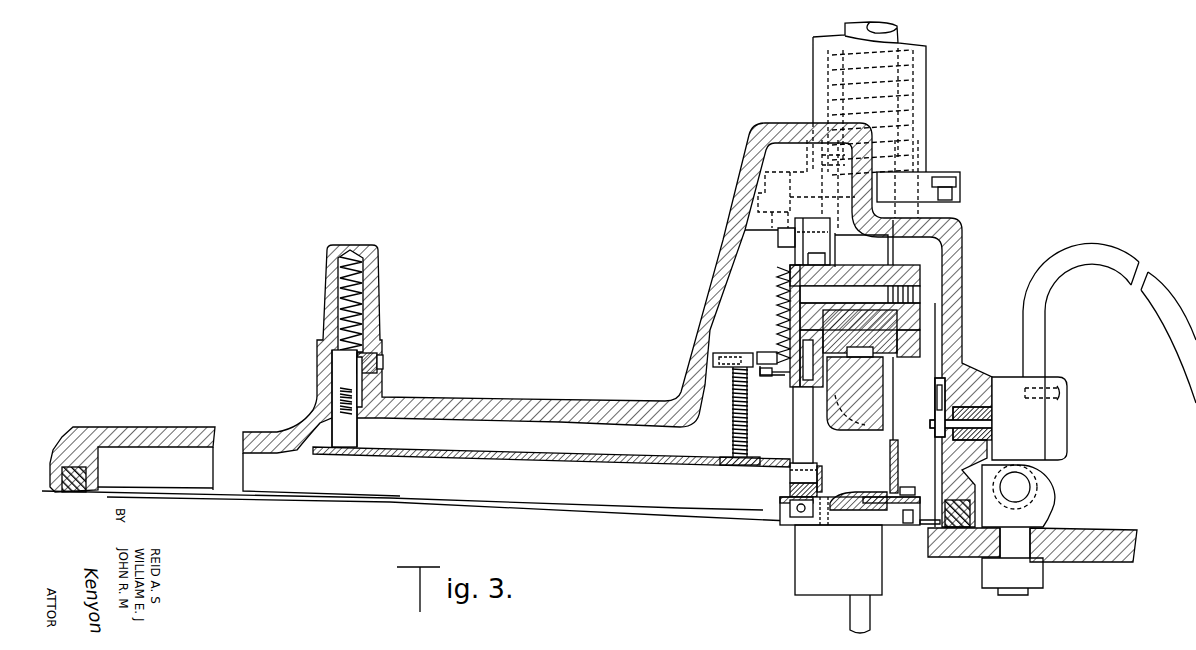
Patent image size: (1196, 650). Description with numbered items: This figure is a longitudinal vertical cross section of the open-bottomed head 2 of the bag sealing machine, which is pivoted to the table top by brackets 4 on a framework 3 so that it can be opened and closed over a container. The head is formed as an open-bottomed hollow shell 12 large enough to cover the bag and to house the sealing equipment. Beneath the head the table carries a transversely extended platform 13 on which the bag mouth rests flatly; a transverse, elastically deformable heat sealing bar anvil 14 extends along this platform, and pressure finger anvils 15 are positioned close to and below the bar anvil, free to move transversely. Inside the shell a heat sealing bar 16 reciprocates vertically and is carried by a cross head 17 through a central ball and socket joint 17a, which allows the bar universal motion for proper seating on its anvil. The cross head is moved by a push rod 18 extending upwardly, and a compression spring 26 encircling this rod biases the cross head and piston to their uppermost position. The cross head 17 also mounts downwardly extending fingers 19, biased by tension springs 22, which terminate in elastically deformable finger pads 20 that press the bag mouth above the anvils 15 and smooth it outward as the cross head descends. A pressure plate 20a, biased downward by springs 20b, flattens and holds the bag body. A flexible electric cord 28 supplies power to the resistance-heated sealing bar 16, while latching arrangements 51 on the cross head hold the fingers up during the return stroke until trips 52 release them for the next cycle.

The head 2 is at (707, 280).
The framework 3 is at (1077, 548).
The brackets 4 is at (1030, 522).
The open-bottomed hollow shell 12 is at (470, 397).
The platform 13 is at (778, 500).
The heat sealing bar anvil 14 is at (845, 505).
The pressure finger anvils 15 is at (801, 515).
The heat sealing bar 16 is at (878, 418).
The cross head 17 is at (913, 300).
The ball and socket joint 17a is at (903, 336).
The push rod 18 is at (897, 34).
The fingers 19 is at (797, 420).
The finger pads 20 is at (790, 470).
The pressure plate 20a is at (445, 449).
The springs 20b is at (357, 318).
The tension springs 22 is at (777, 290).
The compression spring 26 is at (912, 88).
The flexible electric cord 28 is at (1195, 355).
The latching arrangements 51 is at (764, 378).
The trips 52 is at (775, 365).